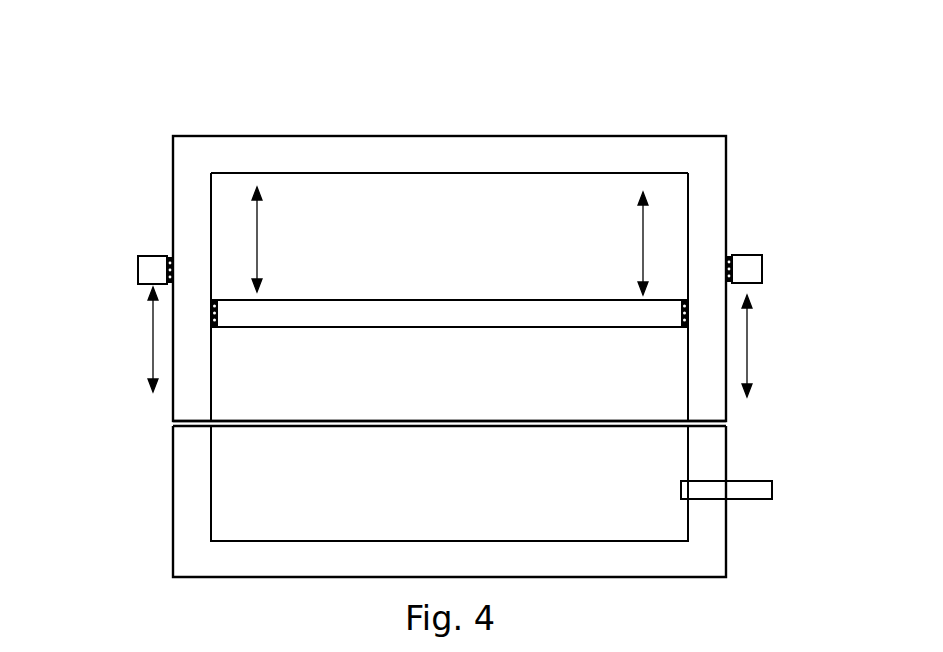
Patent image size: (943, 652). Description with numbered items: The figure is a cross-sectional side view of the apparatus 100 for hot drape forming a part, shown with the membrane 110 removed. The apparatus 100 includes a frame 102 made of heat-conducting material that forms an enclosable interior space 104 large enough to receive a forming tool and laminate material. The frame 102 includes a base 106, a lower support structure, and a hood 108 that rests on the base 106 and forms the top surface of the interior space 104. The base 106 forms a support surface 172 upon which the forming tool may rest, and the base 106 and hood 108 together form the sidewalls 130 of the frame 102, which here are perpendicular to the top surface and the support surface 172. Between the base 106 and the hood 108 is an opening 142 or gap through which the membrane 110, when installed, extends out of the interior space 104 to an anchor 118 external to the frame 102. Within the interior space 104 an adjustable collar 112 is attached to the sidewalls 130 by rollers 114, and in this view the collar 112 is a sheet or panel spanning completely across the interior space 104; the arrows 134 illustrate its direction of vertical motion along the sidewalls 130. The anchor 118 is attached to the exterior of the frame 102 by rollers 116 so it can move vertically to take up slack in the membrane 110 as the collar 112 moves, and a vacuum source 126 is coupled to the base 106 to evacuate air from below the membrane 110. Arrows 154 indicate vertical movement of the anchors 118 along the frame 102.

The apparatus 100 is at (699, 64).
The frame 102 is at (186, 117).
The interior space 104 is at (467, 382).
The base 106 is at (717, 524).
The hood 108 is at (720, 210).
The membrane 110 is at (537, 162).
The adjustable collar 112 is at (238, 312).
The rollers 114 is at (210, 293).
The rollers 116 is at (168, 254).
The anchor 118 is at (152, 271).
The vacuum source 126 is at (754, 487).
The sidewalls 130 is at (215, 193).
The arrows 134 is at (257, 245).
The opening 142 is at (163, 424).
The movement direction 154 is at (150, 335).
The support surface 172 is at (578, 535).